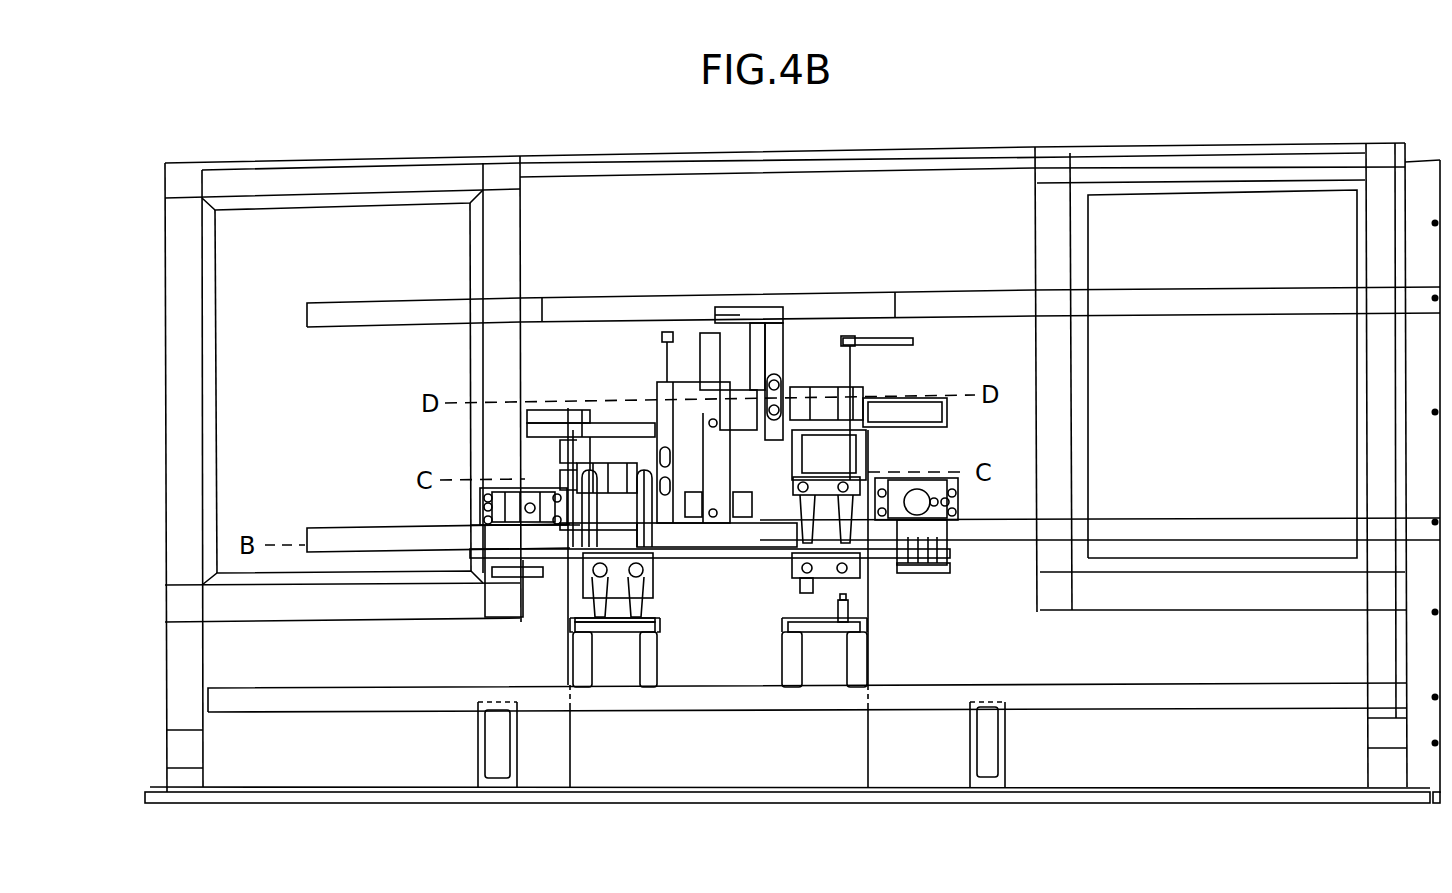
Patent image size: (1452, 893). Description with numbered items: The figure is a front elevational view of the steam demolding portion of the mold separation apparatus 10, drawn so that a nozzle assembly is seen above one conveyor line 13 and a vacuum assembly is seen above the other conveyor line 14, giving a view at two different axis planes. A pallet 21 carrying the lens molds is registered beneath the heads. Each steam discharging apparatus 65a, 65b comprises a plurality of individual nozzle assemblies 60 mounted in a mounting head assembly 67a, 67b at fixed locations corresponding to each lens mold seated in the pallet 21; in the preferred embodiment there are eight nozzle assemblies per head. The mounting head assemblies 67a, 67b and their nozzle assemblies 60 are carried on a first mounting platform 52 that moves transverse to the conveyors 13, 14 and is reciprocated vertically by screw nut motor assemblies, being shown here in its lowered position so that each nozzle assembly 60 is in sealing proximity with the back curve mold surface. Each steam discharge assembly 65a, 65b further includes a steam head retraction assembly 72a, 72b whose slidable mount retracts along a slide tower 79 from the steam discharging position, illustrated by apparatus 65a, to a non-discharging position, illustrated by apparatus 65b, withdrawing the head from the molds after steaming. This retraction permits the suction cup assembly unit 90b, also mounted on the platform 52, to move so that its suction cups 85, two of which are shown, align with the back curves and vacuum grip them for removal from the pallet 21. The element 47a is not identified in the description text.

The mold separation apparatus 10 is at (858, 140).
The conveyor line 13 is at (652, 663).
The conveyor line 14 is at (790, 655).
The pallet 21 is at (790, 624).
The left chuck 47a is at (470, 510).
The first mounting platform 52 is at (340, 530).
The nozzle assembly 60 is at (657, 607).
The steam discharging apparatus 65a is at (623, 533).
The steam discharging apparatus 65b is at (828, 450).
The mounting head assembly 67a is at (583, 573).
The mounting head assembly 67b is at (875, 480).
The steam head retraction assembly 72a is at (647, 396).
The steam head retraction assembly 72b is at (790, 340).
The slide tower 79 is at (680, 522).
The suction cup 85 is at (860, 605).
The suction cup assembly unit 90b is at (968, 505).